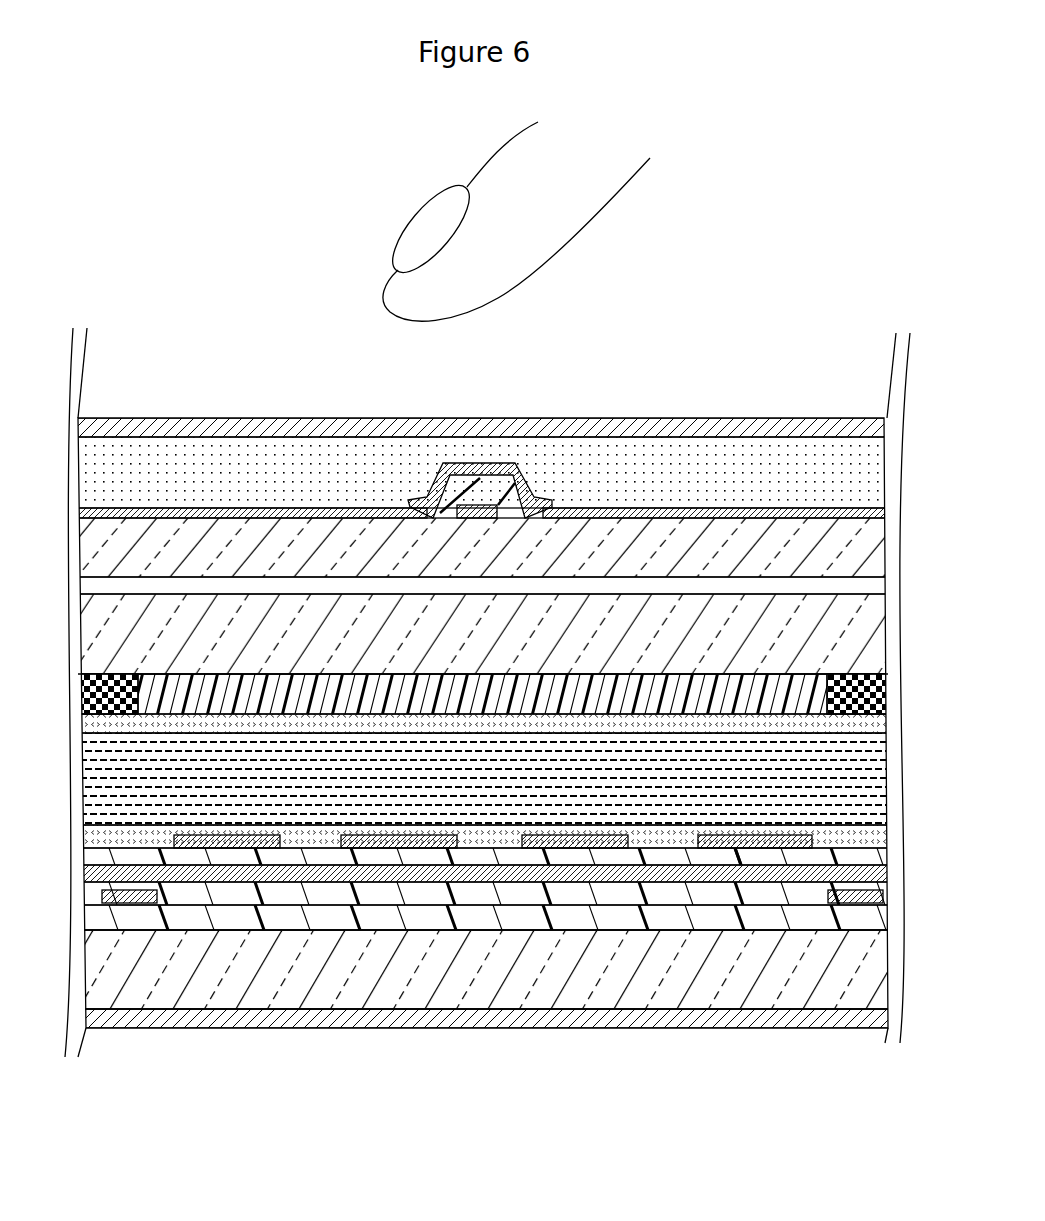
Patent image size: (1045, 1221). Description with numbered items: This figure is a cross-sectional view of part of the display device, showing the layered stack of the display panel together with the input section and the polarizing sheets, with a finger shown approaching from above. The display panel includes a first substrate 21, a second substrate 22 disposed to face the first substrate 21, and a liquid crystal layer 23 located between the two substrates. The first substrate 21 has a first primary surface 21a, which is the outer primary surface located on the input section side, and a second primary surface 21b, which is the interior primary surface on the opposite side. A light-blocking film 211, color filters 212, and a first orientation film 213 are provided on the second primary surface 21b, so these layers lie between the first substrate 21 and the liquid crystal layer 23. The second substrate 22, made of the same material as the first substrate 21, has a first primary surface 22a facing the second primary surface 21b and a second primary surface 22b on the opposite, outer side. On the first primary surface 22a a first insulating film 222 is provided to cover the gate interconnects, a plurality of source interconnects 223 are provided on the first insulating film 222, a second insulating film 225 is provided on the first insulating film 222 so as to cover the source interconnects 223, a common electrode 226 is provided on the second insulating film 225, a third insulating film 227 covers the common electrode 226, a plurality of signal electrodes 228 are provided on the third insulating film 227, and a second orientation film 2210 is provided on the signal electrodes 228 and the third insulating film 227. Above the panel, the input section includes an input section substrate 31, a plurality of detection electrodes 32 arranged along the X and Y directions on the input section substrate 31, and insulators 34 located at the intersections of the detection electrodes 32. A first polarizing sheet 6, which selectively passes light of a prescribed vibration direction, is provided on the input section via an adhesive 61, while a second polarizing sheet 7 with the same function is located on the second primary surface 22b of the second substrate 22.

The first polarizing sheet 6 is at (360, 420).
The adhesive 61 is at (425, 455).
The detection electrodes 32 is at (482, 503).
The insulators 34 is at (500, 490).
The input section substrate 31 is at (325, 517).
The first primary surface 21a is at (283, 590).
The first substrate 21 is at (233, 615).
The second primary surface 21b is at (193, 678).
The color filters 212 is at (755, 700).
The light-blocking film 211 is at (862, 672).
The first orientation film 213 is at (813, 727).
The liquid crystal layer 23 is at (648, 797).
The signal electrodes 228 is at (427, 835).
The third insulating film 227 is at (290, 857).
The second orientation film 2210 is at (656, 838).
The second insulating film 225 is at (610, 893).
The common electrode 226 is at (715, 873).
The source interconnects 223 is at (130, 900).
The first insulating film 222 is at (562, 920).
The second substrate 22 is at (217, 970).
The first primary surface 22a is at (490, 930).
The second primary surface 22b is at (372, 1009).
The second polarizing sheet 7 is at (178, 1015).